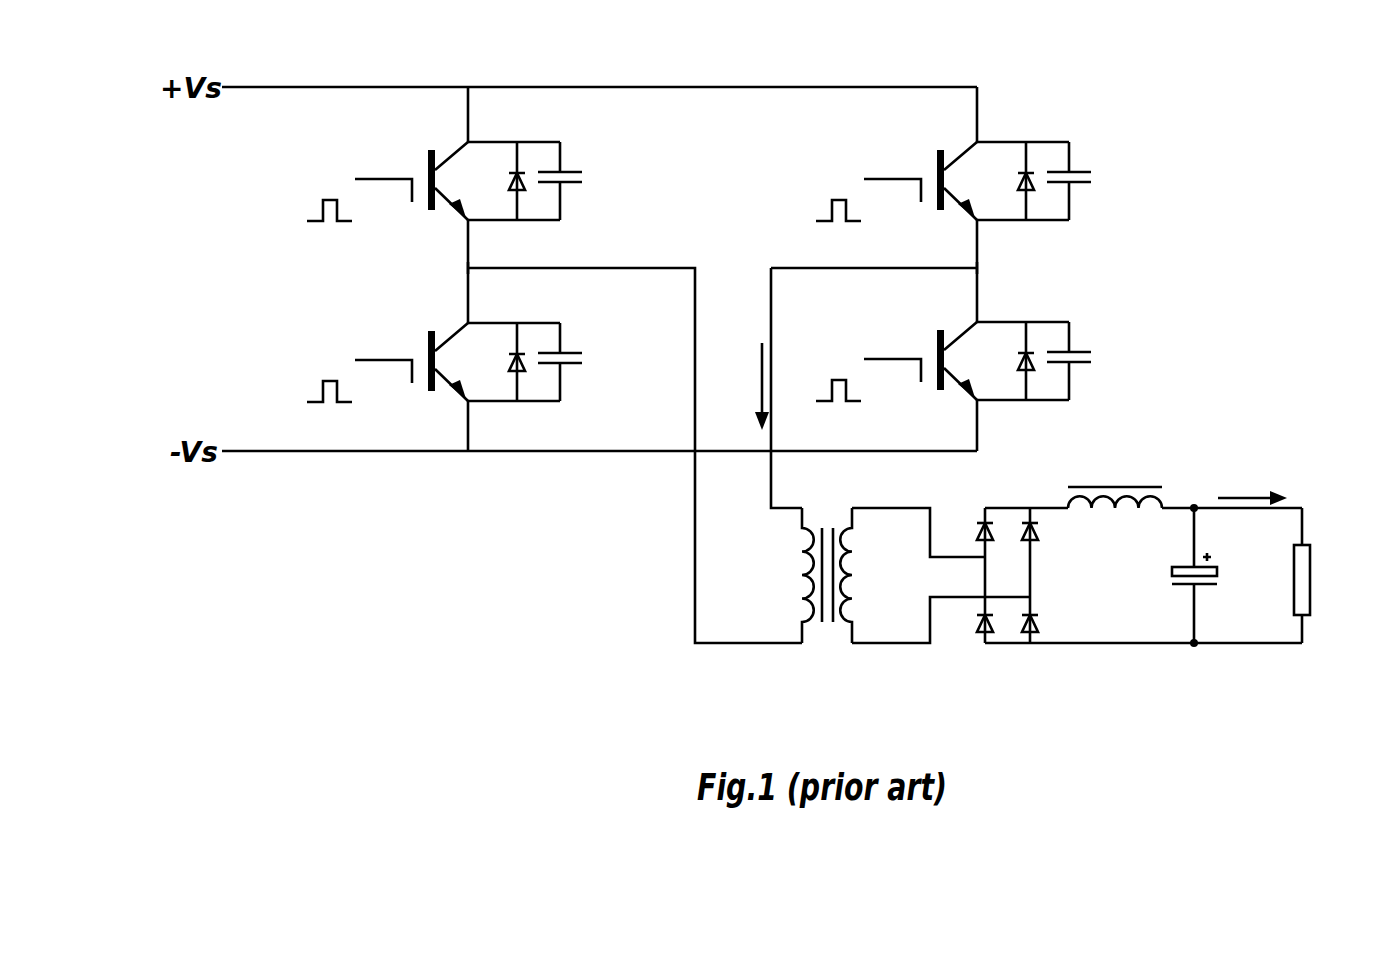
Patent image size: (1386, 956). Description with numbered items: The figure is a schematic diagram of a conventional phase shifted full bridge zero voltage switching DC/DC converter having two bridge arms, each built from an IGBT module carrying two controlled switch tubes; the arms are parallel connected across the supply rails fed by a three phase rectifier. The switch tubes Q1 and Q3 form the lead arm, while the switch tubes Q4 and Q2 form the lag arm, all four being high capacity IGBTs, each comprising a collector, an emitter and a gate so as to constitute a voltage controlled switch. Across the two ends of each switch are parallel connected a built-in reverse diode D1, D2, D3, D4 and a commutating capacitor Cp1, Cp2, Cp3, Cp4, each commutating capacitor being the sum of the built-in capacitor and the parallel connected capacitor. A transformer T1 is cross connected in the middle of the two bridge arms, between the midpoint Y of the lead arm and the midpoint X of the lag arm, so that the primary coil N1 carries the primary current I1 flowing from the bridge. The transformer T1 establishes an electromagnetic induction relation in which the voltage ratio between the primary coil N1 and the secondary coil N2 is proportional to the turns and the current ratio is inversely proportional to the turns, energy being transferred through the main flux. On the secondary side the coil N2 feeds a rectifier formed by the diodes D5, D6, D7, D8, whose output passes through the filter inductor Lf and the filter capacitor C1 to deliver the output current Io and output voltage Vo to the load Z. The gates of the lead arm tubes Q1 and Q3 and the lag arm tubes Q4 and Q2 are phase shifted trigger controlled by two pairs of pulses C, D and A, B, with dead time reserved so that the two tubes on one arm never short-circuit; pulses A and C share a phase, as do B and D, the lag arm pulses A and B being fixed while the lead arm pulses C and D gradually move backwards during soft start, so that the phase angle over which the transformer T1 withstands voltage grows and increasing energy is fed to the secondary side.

The switch tube Q1 is at (457, 171).
The switch tube Q2 is at (966, 351).
The switch tube Q3 is at (457, 352).
The switch tube Q4 is at (966, 171).
The built-in reverse diode D1 is at (502, 181).
The built-in reverse diode D2 is at (1011, 361).
The built-in reverse diode D3 is at (502, 362).
The built-in reverse diode D4 is at (1011, 181).
The commutating capacitor Cp1 is at (580, 181).
The commutating capacitor Cp2 is at (1089, 361).
The commutating capacitor Cp3 is at (580, 362).
The commutating capacitor Cp4 is at (1089, 181).
The transformer T1 is at (824, 559).
The primary coil N1 is at (781, 575).
The secondary coil N2 is at (870, 575).
The rectifier diode D5 is at (964, 532).
The rectifier diode D6 is at (964, 625).
The rectifier diode D7 is at (1051, 532).
The rectifier diode D8 is at (1051, 625).
The output filter inductor Lf is at (1115, 479).
The output filter capacitor C1 is at (1172, 575).
The load Z is at (1319, 575).
The primary coil current I1 is at (749, 386).
The output current Io is at (1252, 485).
The output voltage Vo is at (1326, 496).
The bridge node X is at (992, 259).
The bridge node Y is at (454, 265).
The lag arm pulse A is at (838, 183).
The lag arm pulse B is at (838, 363).
The lead arm pulse C is at (329, 183).
The lead arm pulse D is at (330, 364).